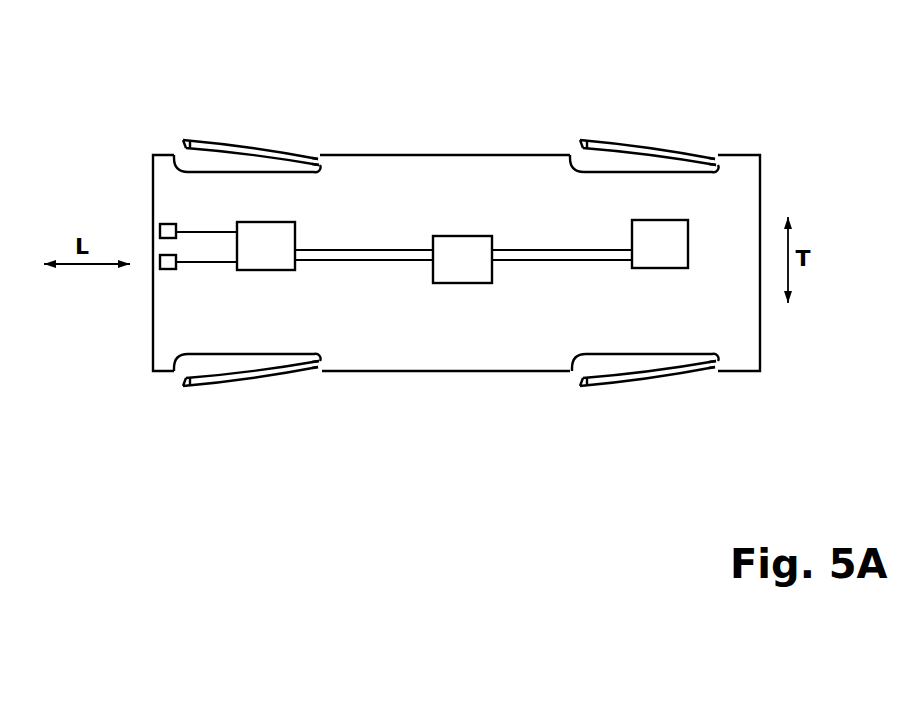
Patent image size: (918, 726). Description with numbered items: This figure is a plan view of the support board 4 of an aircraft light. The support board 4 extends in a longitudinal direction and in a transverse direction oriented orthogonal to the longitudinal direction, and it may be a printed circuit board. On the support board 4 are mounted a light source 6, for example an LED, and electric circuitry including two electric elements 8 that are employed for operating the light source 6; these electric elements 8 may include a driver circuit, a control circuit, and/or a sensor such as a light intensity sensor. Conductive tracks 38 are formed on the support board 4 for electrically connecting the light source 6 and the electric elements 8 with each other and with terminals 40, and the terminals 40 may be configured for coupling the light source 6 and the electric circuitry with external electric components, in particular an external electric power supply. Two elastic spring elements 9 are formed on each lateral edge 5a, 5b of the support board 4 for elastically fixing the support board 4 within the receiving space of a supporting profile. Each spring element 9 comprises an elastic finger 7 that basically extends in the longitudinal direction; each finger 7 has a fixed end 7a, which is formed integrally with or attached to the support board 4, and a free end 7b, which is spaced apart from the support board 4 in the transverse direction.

The support board 4 is at (457, 166).
The lateral edge 5a is at (548, 142).
The lateral edge 5b is at (547, 380).
The light source 6 is at (488, 240).
The elastic finger 7 is at (253, 138).
The fixed end 7a is at (317, 152).
The free end 7b is at (190, 143).
The electric elements 8 is at (292, 233).
The spring element 9 is at (292, 102).
The conductive tracks 38 is at (384, 259).
The terminals 40 is at (160, 262).